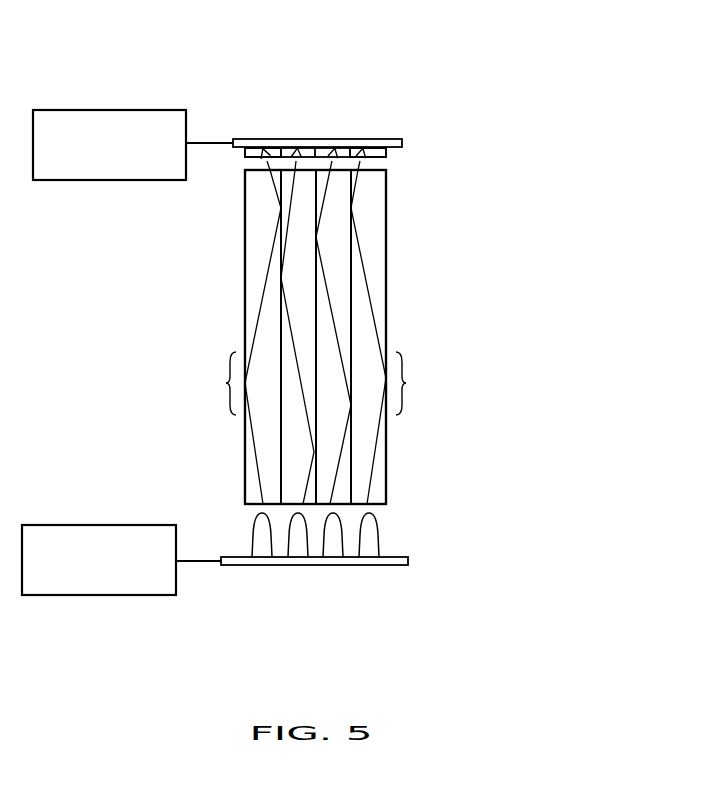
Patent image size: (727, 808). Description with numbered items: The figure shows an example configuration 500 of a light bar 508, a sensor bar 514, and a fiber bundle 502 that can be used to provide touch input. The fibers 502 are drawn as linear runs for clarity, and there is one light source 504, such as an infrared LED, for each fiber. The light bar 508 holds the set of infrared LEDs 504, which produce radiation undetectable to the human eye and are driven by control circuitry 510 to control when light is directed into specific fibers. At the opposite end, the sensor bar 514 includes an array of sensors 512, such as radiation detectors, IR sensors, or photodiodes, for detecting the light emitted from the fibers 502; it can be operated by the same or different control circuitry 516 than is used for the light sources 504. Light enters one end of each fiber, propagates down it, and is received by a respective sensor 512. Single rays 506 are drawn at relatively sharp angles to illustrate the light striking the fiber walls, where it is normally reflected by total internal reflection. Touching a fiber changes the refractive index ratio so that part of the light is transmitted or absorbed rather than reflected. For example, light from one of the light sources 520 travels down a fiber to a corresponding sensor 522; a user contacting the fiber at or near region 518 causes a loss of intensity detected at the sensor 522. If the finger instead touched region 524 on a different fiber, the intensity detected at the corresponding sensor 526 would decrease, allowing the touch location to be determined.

The configuration 500 is at (601, 91).
The fiber bundle 502 is at (403, 237).
The light source 504 is at (387, 570).
The single rays 506 is at (385, 470).
The light bar 508 is at (408, 561).
The control circuitry 510 is at (51, 525).
The sensor 512 is at (411, 155).
The sensor bar 514 is at (357, 82).
The control circuitry 516 is at (117, 110).
The region 518 is at (209, 383).
The light source 520 is at (258, 557).
The sensor 522 is at (256, 148).
The region 524 is at (424, 383).
The sensor 526 is at (373, 150).